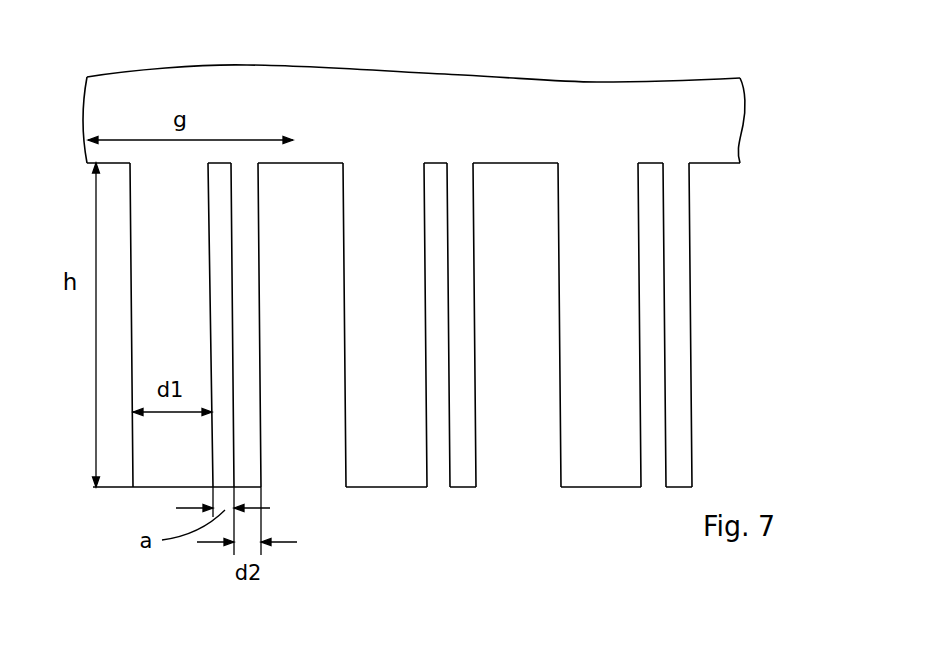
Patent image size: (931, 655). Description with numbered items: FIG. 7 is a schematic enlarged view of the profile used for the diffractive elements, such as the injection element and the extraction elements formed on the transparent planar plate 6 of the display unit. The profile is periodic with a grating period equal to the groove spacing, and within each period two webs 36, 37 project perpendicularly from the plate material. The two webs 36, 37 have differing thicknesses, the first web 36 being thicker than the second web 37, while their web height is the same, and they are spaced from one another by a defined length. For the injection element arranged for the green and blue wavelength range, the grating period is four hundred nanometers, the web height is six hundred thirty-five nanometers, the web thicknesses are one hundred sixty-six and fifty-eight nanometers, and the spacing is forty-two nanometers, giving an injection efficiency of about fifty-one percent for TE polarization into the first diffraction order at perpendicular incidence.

The transparent planar plate 6 is at (290, 67).
The web 36 is at (163, 487).
The web 37 is at (263, 447).